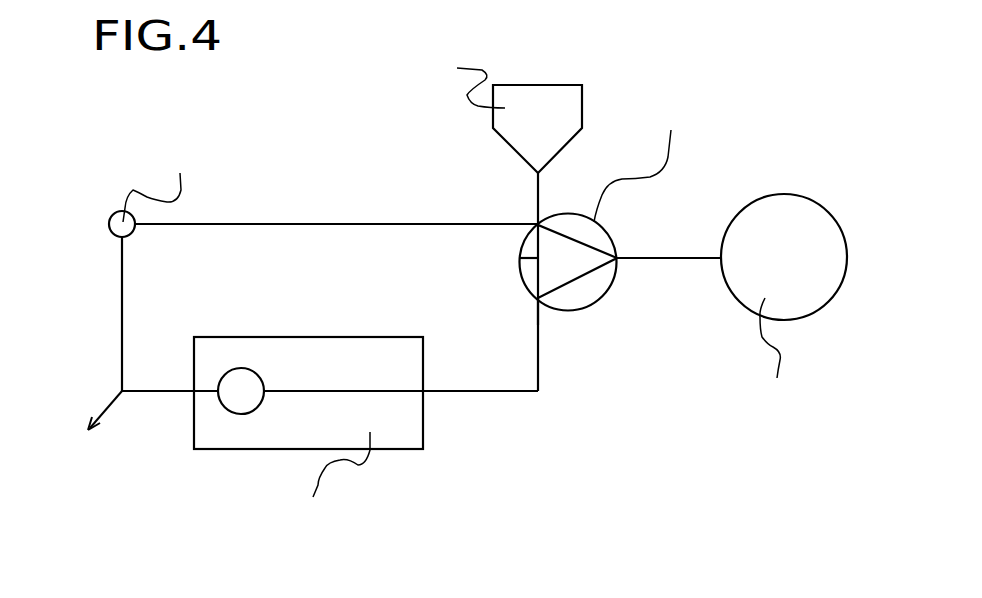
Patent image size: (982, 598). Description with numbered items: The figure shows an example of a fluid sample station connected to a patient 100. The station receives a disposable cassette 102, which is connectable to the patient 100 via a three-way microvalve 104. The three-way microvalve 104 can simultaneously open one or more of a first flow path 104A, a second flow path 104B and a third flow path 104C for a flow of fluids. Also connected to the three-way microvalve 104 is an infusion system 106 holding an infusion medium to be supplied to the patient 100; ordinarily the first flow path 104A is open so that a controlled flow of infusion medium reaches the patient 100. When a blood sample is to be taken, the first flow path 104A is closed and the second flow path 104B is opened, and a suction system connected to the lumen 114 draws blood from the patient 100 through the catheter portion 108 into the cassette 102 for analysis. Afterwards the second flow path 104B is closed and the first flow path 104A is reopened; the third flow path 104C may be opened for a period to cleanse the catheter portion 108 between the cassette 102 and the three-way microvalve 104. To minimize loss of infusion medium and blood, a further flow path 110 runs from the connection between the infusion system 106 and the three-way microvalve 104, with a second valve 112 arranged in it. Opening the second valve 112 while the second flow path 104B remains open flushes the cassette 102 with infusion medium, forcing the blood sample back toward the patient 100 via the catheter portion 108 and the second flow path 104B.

The patient 100 is at (794, 303).
The disposable cassette 102 is at (290, 337).
The 3-way microvalve 104 is at (560, 213).
The first flow path 104A is at (595, 240).
The second flow path 104B is at (607, 277).
The third flow path 104C is at (520, 257).
The infusion system 106 is at (446, 124).
The catheter portion 108 is at (476, 394).
The further flow path 110 is at (373, 222).
The second valve 112 is at (120, 213).
The lumen 114 is at (137, 350).